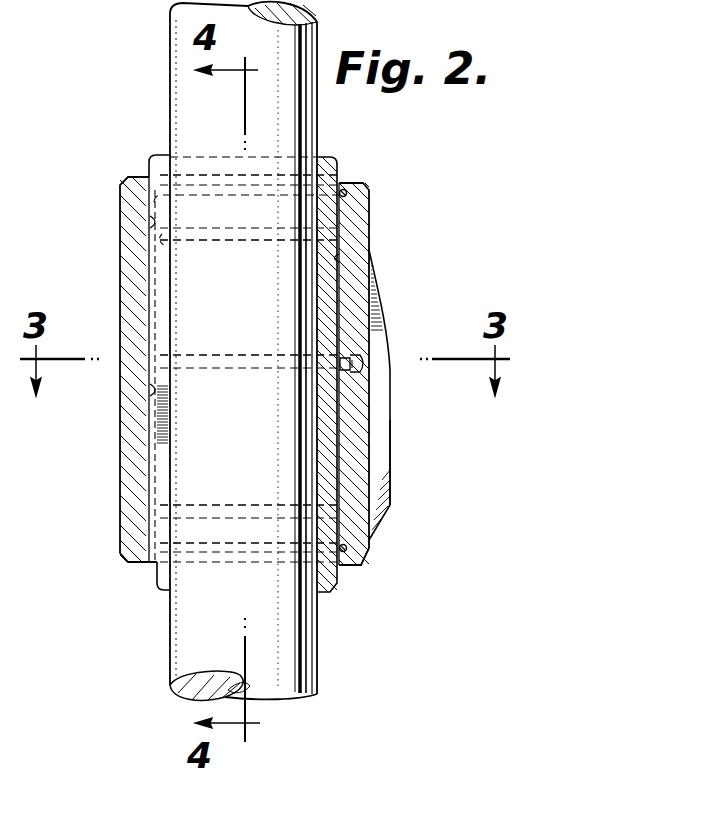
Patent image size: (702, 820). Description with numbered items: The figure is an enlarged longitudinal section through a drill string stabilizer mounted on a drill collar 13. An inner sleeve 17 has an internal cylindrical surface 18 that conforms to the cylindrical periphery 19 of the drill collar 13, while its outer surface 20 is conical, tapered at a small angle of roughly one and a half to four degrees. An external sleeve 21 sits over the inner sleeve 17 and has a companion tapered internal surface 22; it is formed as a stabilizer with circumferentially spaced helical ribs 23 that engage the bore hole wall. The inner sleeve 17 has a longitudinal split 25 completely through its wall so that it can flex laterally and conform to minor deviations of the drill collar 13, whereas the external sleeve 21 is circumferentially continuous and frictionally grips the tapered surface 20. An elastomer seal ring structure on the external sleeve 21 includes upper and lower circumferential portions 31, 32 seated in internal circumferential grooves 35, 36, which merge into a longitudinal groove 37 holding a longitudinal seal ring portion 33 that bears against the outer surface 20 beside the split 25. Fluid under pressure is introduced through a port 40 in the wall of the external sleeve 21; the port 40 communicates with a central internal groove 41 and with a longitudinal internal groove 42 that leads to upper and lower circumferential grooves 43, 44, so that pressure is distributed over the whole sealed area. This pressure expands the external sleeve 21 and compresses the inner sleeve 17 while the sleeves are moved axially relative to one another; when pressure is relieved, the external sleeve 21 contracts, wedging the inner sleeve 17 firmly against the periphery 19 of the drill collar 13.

The drill collar 13 is at (193, 89).
The cylindrical periphery 19 is at (317, 660).
The external sleeve 21 is at (137, 514).
The outer surface of inner sleeve 20 is at (338, 578).
The internal cylindrical surface 18 is at (310, 392).
The inner sleeve 17 is at (322, 422).
The helical ribs 23 is at (392, 476).
The upper circumferential seal ring portion 31 is at (349, 192).
The lower circumferential seal ring portion 32 is at (349, 548).
The longitudinal internal groove 42 is at (339, 258).
The port 40 is at (348, 360).
The tapered internal surface 22 is at (150, 222).
The longitudinal seal ring portion 33 is at (143, 272).
The longitudinal groove 37 is at (150, 390).
The longitudinal split 25 is at (165, 433).
The upper internal circumferential groove 35 is at (213, 188).
The upper circumferential groove 43 is at (244, 242).
The internal groove 41 is at (252, 357).
The lower circumferential groove 44 is at (215, 505).
The lower internal circumferential groove 36 is at (257, 545).